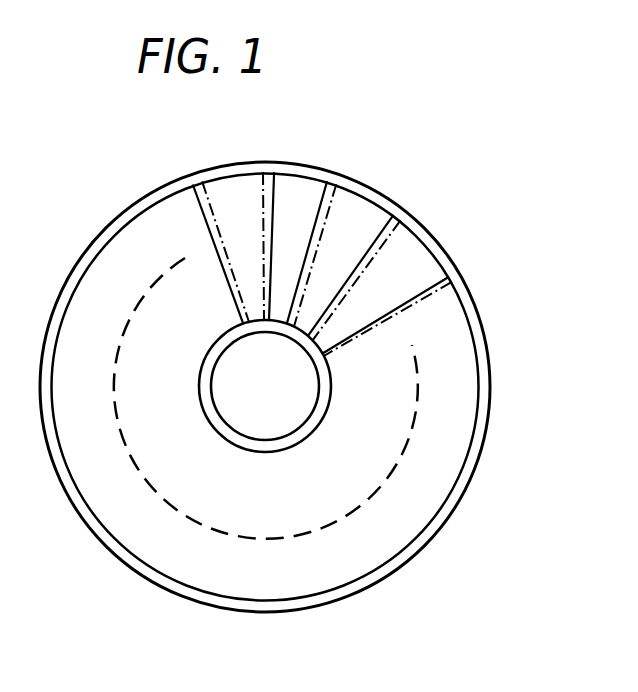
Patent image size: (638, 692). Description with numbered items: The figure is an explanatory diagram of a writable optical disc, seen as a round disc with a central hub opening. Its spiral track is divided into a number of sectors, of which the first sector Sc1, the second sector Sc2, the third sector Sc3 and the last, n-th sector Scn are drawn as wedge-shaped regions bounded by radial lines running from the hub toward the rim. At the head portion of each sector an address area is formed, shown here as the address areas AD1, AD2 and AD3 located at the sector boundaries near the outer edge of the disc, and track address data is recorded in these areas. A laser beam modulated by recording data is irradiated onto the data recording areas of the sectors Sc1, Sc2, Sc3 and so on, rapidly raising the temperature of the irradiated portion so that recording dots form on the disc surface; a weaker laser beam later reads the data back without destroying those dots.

The address area AD1 is at (267, 175).
The address area AD2 is at (333, 178).
The address area AD3 is at (400, 220).
The sector Scn is at (225, 252).
The sector Sc1 is at (293, 216).
The sector Sc2 is at (348, 228).
The sector Sc3 is at (387, 308).